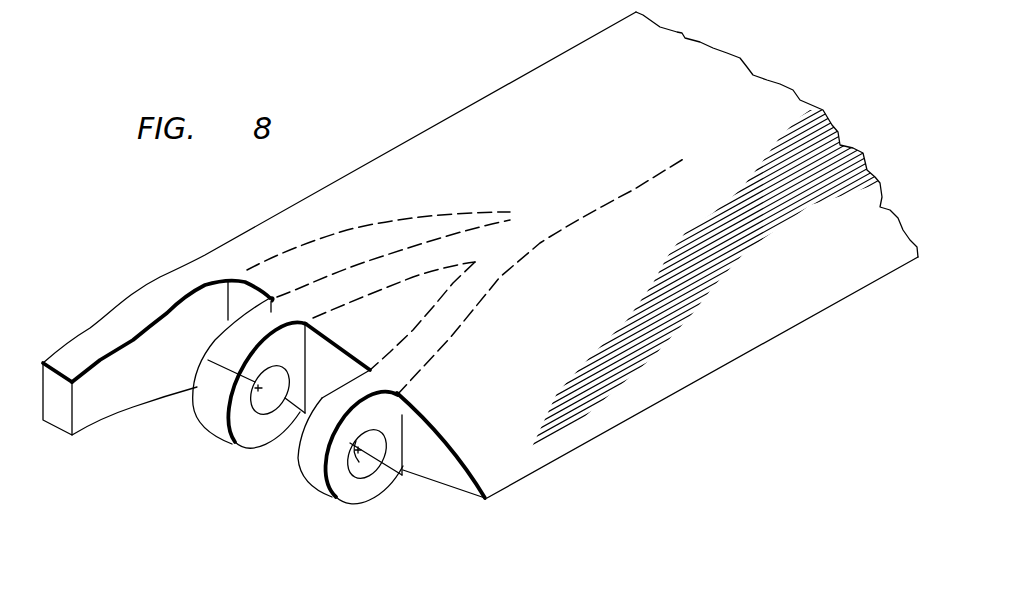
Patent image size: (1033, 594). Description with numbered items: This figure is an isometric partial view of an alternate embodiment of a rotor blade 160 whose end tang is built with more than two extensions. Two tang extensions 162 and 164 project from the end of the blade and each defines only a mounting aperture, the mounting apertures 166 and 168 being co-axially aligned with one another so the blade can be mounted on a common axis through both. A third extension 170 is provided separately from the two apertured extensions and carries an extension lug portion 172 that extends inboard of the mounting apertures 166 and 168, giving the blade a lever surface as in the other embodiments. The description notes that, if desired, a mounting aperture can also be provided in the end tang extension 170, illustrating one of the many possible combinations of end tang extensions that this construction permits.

The rotor blade 160 is at (440, 108).
The tang extension 162 is at (270, 296).
The tang extension 164 is at (340, 500).
The mounting aperture 166 is at (233, 438).
The mounting aperture 168 is at (365, 475).
The third extension 170 is at (170, 278).
The extension lug portion 172 is at (80, 352).